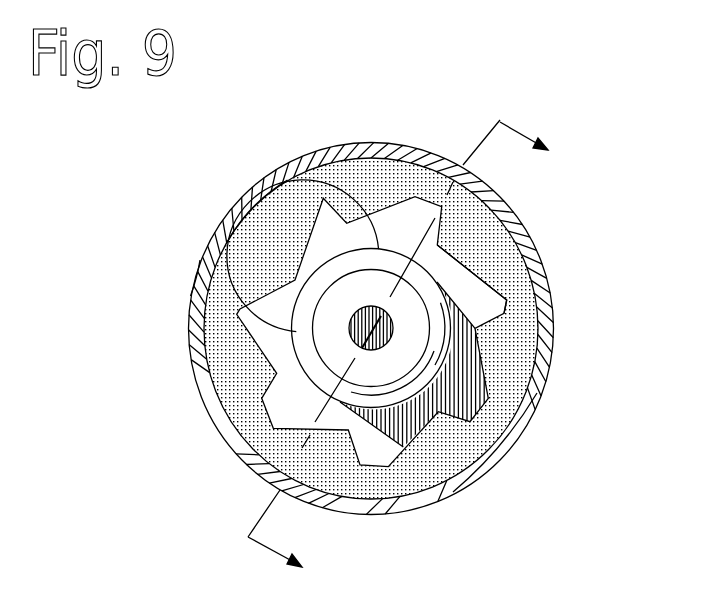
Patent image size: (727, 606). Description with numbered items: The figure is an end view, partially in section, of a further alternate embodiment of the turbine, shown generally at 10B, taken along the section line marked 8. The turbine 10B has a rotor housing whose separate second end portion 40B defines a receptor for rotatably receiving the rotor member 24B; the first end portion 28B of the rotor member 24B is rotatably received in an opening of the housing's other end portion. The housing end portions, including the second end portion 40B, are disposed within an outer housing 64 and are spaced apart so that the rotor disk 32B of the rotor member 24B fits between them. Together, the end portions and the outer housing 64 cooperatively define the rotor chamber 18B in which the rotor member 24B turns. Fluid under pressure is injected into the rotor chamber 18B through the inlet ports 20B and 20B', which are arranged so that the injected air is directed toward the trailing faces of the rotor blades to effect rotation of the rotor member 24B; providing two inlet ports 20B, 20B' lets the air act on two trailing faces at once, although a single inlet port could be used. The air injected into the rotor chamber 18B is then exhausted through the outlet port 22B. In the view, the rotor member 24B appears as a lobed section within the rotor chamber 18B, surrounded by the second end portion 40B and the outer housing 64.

The turbine 10B is at (592, 163).
The rotor chamber 18B is at (382, 174).
The inlet port 20B is at (370, 354).
The inlet port 20B' is at (561, 439).
The outlet port 22B is at (224, 430).
The rotor member 24B is at (473, 280).
The first end portion of the rotor member 28B is at (304, 362).
The rotor disk 32B is at (507, 293).
The second end portion 40B is at (266, 220).
The outer housing 64 is at (200, 262).
The section line 8- 8 is at (395, 334).